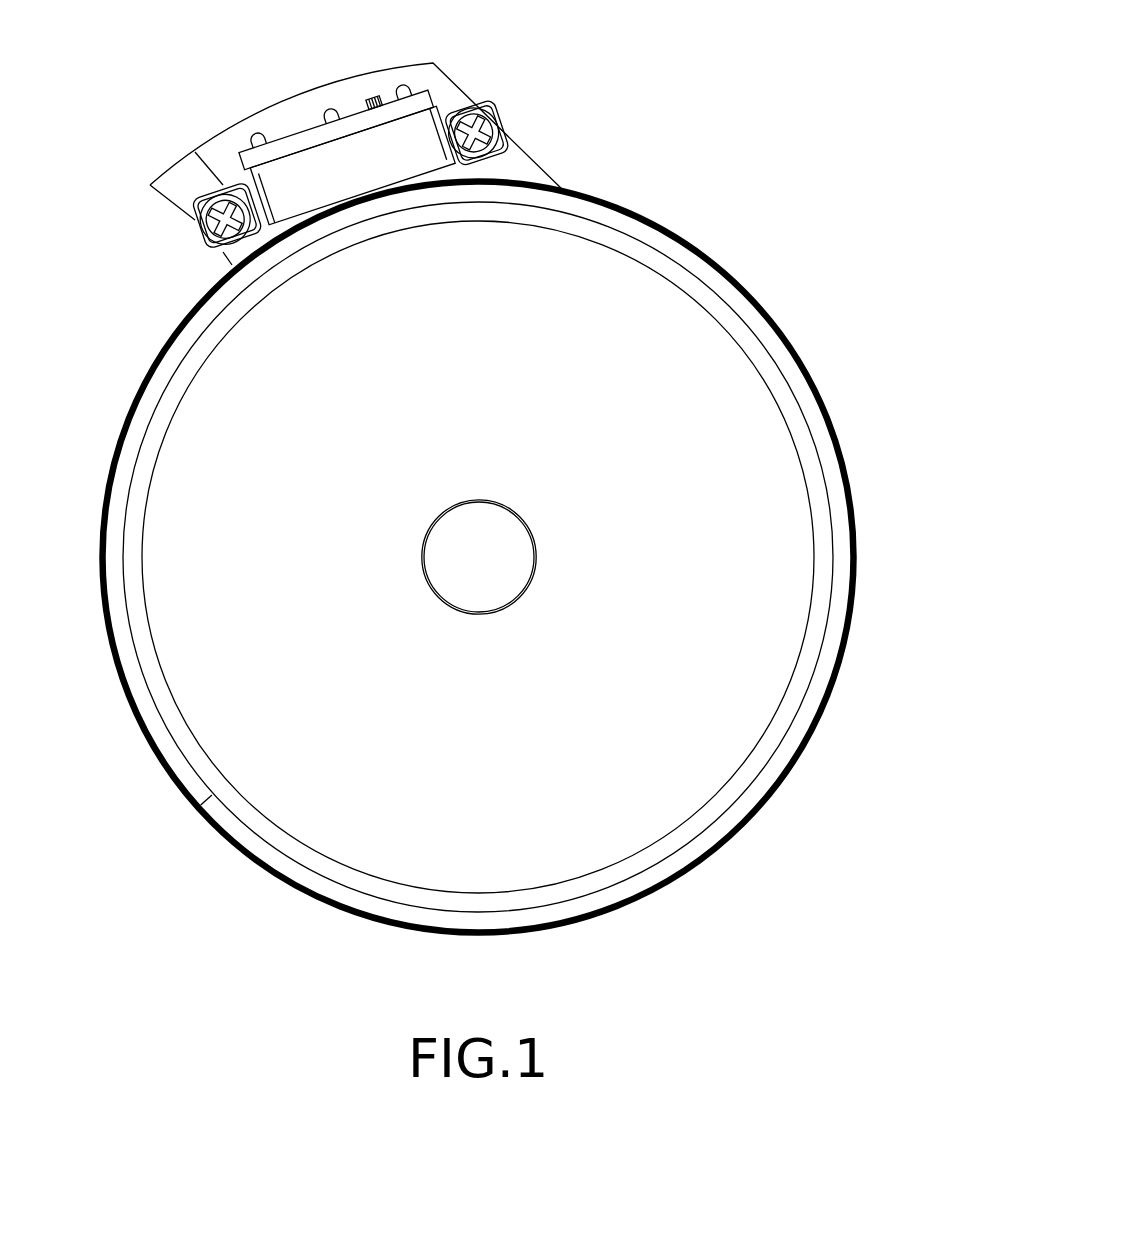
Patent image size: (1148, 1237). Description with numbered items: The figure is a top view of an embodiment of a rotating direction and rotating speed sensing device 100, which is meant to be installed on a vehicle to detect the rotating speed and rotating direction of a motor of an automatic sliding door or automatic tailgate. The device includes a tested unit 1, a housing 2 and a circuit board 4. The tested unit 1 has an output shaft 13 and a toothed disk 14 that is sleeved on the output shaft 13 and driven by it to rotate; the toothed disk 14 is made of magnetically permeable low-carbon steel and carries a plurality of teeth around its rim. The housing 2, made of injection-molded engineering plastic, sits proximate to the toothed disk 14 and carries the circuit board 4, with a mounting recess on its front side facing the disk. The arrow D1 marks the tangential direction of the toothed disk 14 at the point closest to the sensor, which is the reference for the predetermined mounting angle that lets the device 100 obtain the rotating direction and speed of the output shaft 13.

The rotating direction and rotating speed sensing device 100 is at (746, 30).
The tested unit 1 is at (810, 303).
The toothed disk 14 is at (692, 341).
The output shaft 13 is at (512, 551).
The housing 2 is at (407, 150).
The circuit board 4 is at (348, 115).
The tangential direction D1 is at (398, 183).